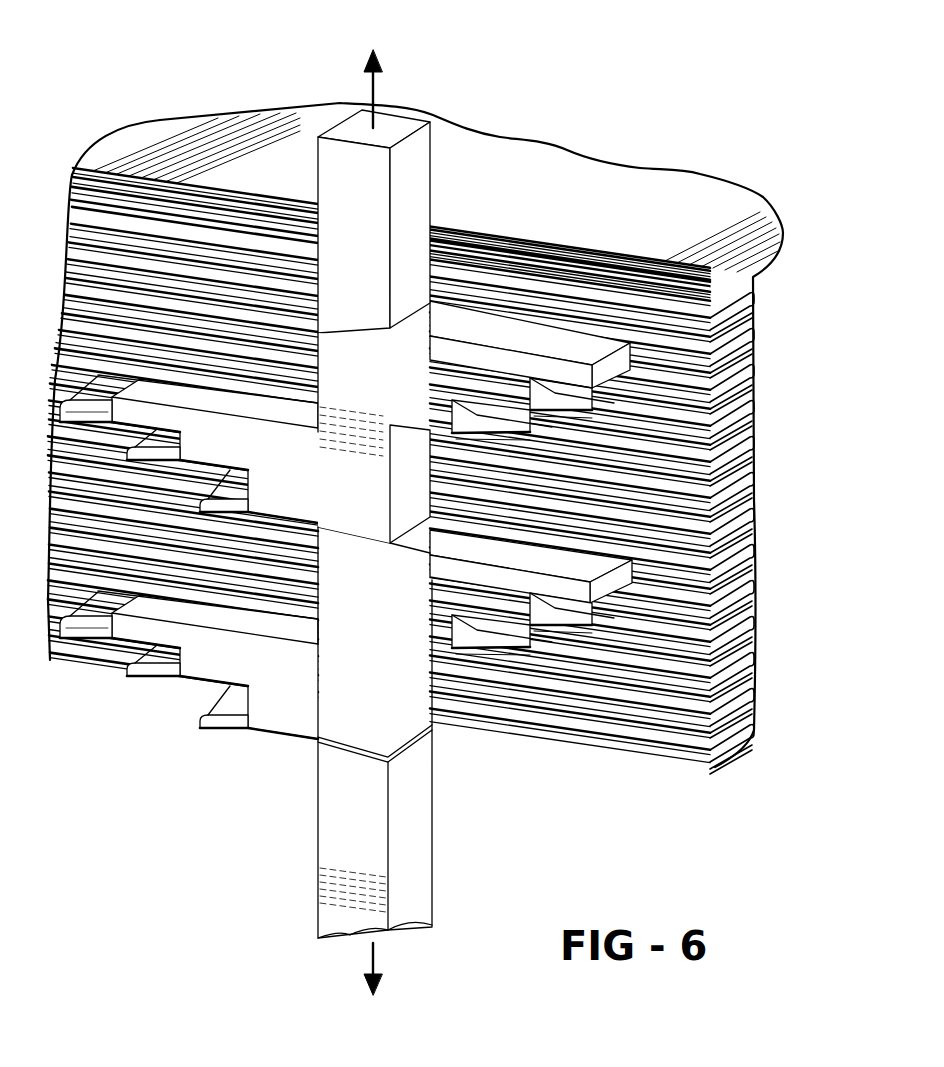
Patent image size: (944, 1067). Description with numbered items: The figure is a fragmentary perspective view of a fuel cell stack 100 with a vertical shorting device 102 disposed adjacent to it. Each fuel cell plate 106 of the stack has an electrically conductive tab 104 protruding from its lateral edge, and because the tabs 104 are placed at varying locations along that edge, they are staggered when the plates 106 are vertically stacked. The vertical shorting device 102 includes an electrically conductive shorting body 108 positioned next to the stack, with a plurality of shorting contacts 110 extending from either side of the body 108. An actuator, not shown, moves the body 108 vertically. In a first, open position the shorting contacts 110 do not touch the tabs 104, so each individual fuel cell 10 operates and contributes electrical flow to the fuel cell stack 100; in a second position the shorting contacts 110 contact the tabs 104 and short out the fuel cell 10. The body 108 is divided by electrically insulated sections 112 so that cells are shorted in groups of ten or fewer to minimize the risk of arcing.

The fuel cell stack 100 is at (447, 501).
The fuel cell 10 is at (450, 469).
The vertical shorting device 102 is at (404, 108).
The electrically conductive tab 104 is at (643, 387).
The fuel cell plate 106 is at (683, 357).
The shorting body 108 is at (353, 782).
The shorting contact 110 is at (568, 372).
The electrically insulated section 112 is at (430, 318).